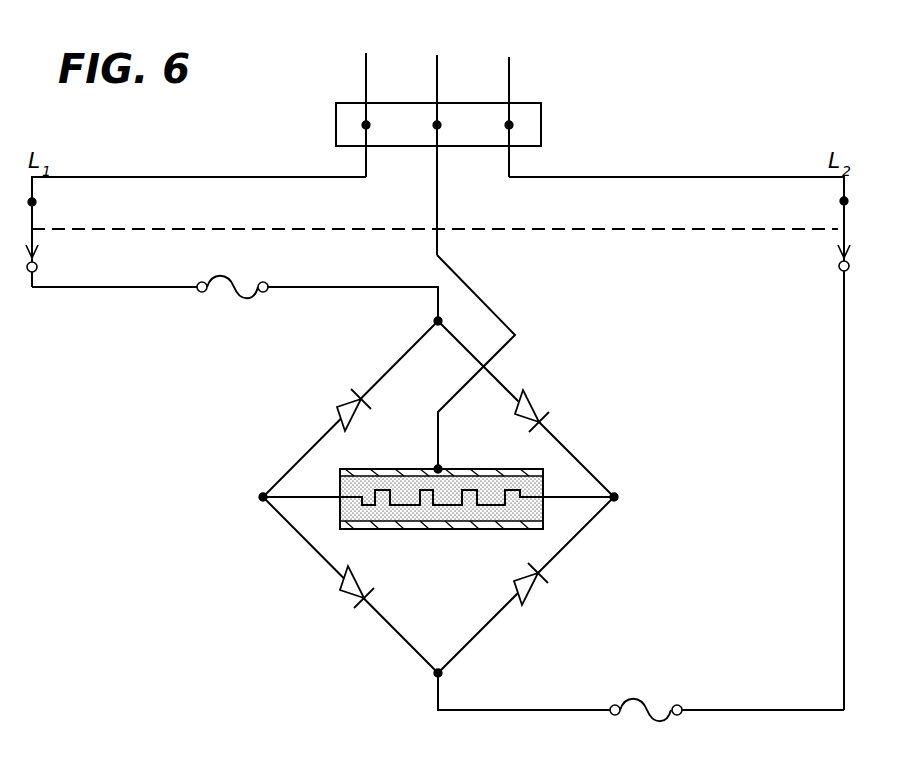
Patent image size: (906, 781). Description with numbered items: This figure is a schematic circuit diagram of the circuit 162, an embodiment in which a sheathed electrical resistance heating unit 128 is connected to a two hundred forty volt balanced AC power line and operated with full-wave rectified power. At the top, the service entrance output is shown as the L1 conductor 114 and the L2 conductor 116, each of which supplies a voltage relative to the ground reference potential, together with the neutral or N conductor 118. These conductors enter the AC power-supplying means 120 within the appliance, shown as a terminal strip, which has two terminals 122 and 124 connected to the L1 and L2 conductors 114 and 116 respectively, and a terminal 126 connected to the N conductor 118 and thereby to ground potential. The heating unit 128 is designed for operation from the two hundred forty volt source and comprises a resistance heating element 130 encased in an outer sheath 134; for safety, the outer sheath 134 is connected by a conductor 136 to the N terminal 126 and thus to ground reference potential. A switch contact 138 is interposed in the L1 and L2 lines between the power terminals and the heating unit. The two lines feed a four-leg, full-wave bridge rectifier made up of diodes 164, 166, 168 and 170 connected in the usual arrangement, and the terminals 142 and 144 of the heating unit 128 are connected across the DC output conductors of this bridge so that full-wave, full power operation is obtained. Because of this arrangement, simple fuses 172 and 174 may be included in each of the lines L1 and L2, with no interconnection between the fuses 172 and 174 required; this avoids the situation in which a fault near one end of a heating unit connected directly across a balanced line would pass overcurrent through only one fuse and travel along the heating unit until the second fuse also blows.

The L1 conductor 114 is at (364, 67).
The L2 conductor 116 is at (507, 60).
The neutral conductor 118 is at (435, 70).
The AC power-supplying means 120 is at (545, 137).
The terminal 122 is at (395, 98).
The terminal 124 is at (511, 123).
The N terminal 126 is at (439, 123).
The sheathed electrical resistance heating unit 128 is at (441, 511).
The resistance heating element 130 is at (375, 493).
The outer sheath 134 is at (510, 531).
The conductor 136 is at (492, 312).
The switch contact 138 is at (32, 216).
The heating unit terminal 142 is at (263, 500).
The heating unit terminal 144 is at (616, 494).
The circuit 162 is at (240, 574).
The diode 164 is at (345, 398).
The diode 166 is at (346, 598).
The diode 168 is at (540, 405).
The diode 170 is at (540, 600).
The fuse 172 is at (236, 292).
The fuse 174 is at (650, 706).